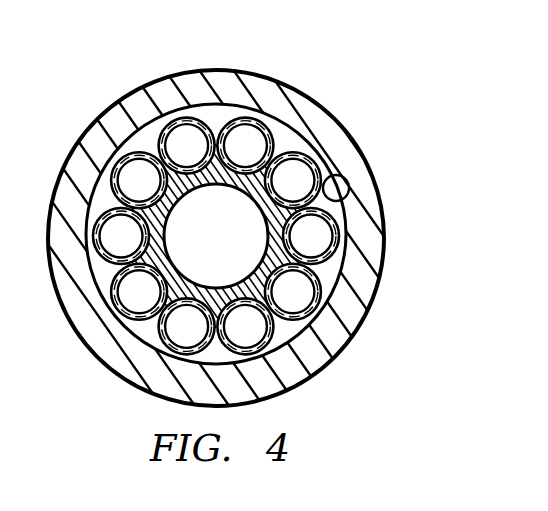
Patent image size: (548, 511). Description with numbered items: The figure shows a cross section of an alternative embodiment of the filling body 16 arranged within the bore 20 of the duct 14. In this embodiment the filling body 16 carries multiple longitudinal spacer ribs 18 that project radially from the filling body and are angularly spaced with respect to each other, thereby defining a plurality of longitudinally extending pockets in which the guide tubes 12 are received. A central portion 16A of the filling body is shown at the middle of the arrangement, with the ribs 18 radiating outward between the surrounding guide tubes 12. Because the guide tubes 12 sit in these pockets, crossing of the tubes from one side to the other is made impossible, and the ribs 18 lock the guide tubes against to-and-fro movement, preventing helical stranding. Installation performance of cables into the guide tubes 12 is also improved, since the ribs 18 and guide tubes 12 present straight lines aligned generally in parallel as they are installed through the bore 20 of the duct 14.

The guide tube 12 is at (307, 153).
The duct 14 is at (262, 73).
The filling body 16 is at (124, 99).
The central member 16A is at (259, 248).
The longitudinal spacer rib 18 is at (194, 191).
The bore 20 is at (352, 199).